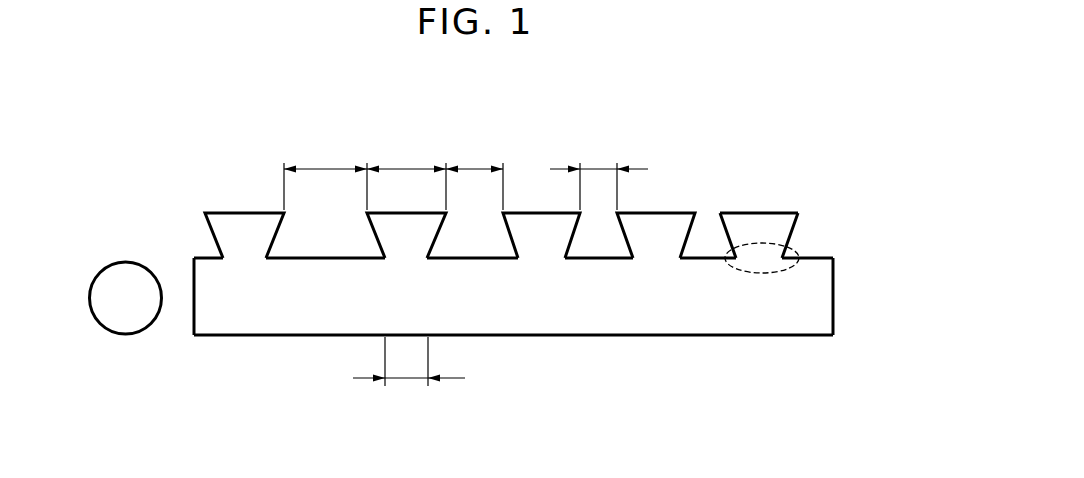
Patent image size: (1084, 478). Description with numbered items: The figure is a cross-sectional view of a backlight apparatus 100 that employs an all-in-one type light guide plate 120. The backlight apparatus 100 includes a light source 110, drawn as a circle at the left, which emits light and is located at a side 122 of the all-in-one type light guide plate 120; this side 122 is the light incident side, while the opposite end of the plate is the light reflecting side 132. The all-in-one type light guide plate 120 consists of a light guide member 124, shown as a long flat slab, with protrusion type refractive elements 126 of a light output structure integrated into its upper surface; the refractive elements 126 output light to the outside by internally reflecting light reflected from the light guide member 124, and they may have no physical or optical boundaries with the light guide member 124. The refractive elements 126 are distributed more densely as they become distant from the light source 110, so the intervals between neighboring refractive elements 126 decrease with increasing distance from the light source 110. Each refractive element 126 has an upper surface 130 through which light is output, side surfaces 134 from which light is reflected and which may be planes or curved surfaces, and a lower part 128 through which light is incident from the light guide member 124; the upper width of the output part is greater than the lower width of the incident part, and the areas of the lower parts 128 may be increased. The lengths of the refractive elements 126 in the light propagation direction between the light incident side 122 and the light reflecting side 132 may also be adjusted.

The backlight apparatus 100 is at (272, 366).
The light source 110 is at (125, 262).
The all-in-one type light guide plate 120 is at (826, 178).
The side of the light guide plate 122 is at (193, 268).
The light guide member 124 is at (823, 283).
The refractive elements 126 is at (782, 227).
The lower parts of the refractive elements 128 is at (762, 273).
The upper surfaces of the refractive elements 130 is at (759, 203).
The light reflecting side 132 is at (833, 320).
The side surfaces of the refractive elements 134 is at (689, 232).